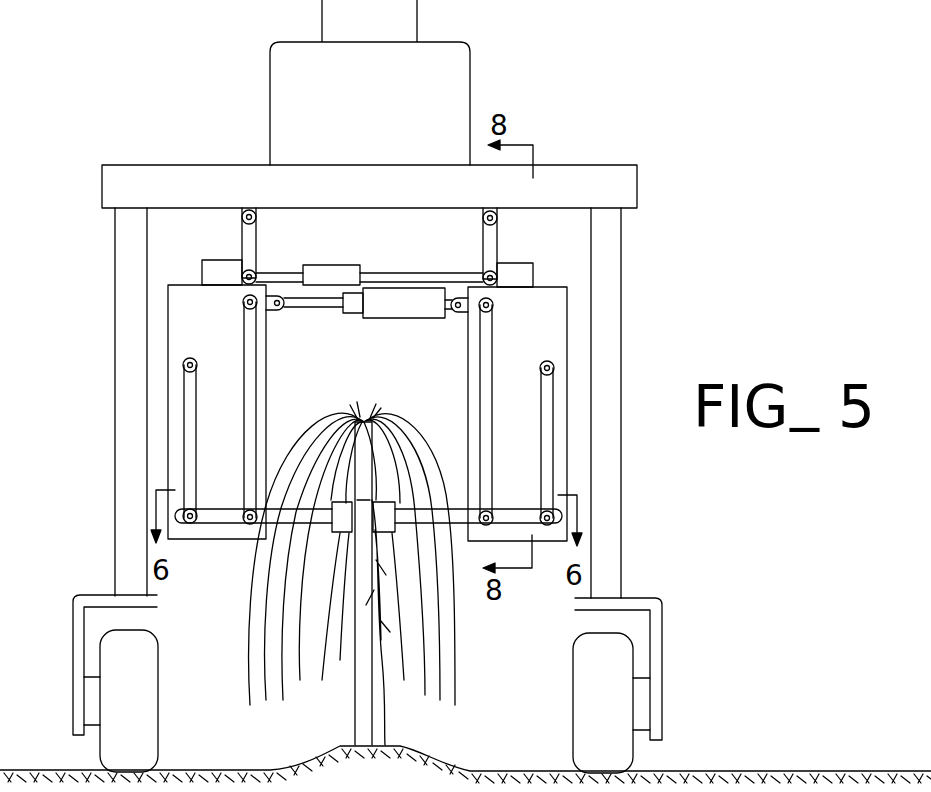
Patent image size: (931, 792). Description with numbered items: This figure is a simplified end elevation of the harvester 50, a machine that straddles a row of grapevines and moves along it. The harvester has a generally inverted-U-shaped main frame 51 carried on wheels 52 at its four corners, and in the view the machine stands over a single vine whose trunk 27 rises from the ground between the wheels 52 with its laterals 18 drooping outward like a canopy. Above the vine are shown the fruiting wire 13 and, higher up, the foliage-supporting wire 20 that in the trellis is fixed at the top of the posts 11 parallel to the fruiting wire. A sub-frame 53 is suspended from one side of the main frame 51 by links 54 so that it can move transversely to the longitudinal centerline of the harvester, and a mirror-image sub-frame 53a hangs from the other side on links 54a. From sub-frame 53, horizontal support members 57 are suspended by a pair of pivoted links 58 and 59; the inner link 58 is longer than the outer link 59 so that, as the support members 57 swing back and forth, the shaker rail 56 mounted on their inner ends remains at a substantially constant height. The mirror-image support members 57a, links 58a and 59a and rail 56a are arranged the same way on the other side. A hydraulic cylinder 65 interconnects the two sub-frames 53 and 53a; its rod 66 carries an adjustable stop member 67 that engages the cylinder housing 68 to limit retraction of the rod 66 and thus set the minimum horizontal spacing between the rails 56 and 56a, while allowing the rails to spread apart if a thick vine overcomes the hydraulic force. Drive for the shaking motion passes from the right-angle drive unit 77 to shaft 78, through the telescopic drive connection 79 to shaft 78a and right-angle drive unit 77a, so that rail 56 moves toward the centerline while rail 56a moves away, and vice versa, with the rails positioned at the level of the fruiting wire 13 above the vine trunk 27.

The post 11 is at (357, 678).
The fruiting wire 13 is at (373, 506).
The laterals 18 is at (285, 641).
The foliage-supporting wire 20 is at (364, 556).
The vine trunk 27 is at (386, 706).
The harvester 50 is at (218, 102).
The frame 51 is at (152, 170).
The wheels 52 is at (143, 723).
The sub-frame 53 is at (580, 344).
The sub-frame 53a is at (158, 393).
The links 54 is at (498, 239).
The links 54a is at (246, 243).
The rail 56 is at (388, 534).
The rail 56a is at (341, 535).
The support members 57 is at (506, 510).
The support members 57a is at (222, 524).
The link 58 is at (480, 400).
The link 58a is at (253, 408).
The link 59 is at (547, 448).
The link 59a is at (184, 452).
The hydraulic cylinder 65 is at (367, 334).
The rod 66 is at (306, 309).
The adjustable stop member 67 is at (352, 314).
The cylinder housing 68 is at (423, 319).
The right-angle drive unit 77 is at (533, 262).
The right-angle drive unit 77a is at (203, 275).
The shaft 78 is at (369, 245).
The shaft 78a is at (275, 267).
The telescopic drive connection 79 is at (338, 264).